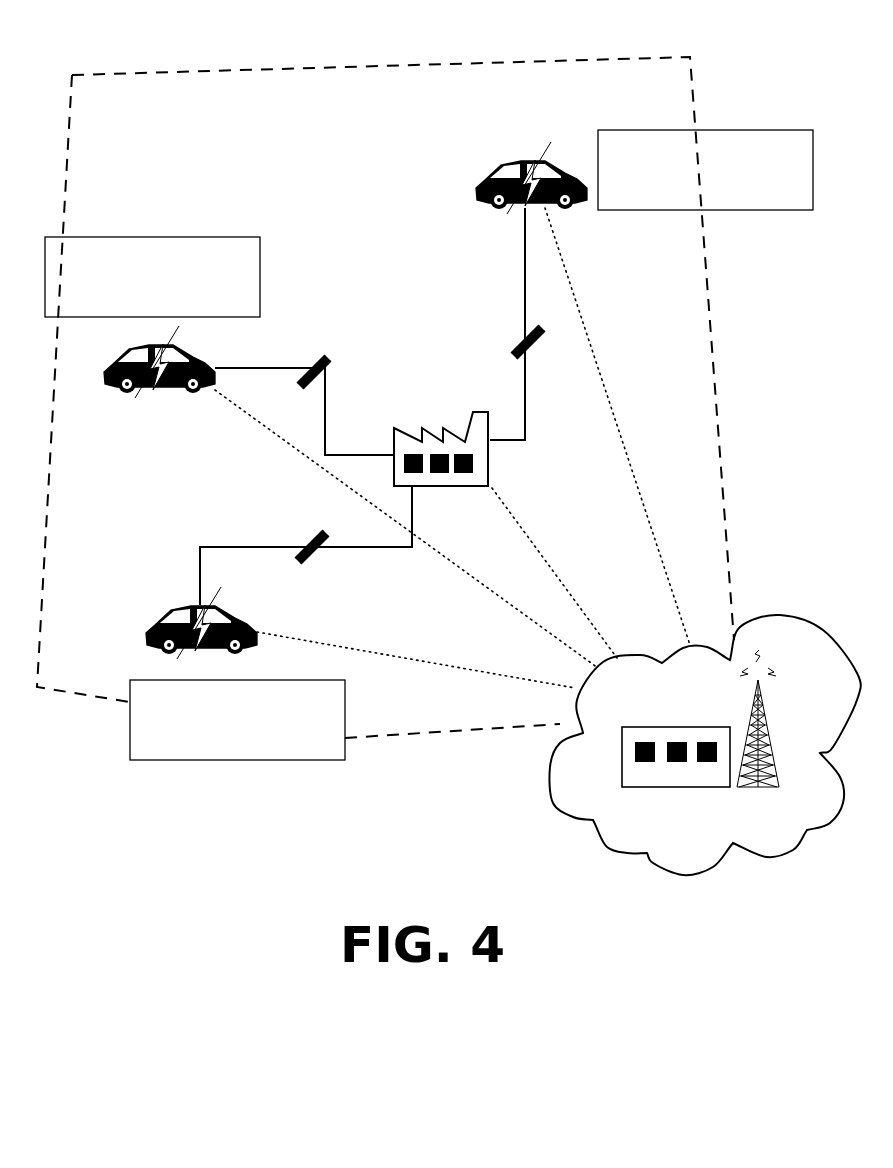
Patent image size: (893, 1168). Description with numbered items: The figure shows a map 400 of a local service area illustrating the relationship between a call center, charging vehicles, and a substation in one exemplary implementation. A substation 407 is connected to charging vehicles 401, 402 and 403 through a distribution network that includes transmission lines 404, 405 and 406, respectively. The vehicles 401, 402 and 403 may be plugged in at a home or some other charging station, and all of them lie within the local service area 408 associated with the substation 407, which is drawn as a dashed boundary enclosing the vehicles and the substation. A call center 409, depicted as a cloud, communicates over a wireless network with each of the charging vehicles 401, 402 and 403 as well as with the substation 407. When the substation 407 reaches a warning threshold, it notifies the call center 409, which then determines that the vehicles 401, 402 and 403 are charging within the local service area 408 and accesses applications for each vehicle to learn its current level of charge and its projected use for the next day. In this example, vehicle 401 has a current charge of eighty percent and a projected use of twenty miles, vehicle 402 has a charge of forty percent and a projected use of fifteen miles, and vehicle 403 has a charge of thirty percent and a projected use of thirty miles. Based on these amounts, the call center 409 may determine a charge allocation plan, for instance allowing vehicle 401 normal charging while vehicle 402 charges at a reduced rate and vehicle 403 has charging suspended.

The map 400 is at (205, 852).
The vehicle 401 is at (513, 160).
The vehicle 402 is at (122, 394).
The vehicle 403 is at (163, 604).
The transmission line 404 is at (525, 300).
The transmission line 405 is at (278, 368).
The transmission line 406 is at (288, 547).
The substation 407 is at (447, 428).
The local service area 408 is at (148, 73).
The call center 409 is at (556, 800).